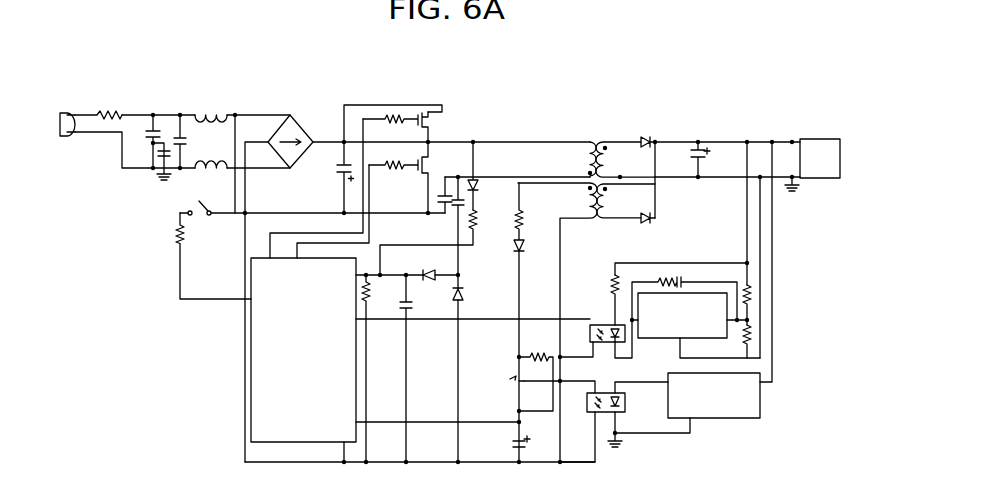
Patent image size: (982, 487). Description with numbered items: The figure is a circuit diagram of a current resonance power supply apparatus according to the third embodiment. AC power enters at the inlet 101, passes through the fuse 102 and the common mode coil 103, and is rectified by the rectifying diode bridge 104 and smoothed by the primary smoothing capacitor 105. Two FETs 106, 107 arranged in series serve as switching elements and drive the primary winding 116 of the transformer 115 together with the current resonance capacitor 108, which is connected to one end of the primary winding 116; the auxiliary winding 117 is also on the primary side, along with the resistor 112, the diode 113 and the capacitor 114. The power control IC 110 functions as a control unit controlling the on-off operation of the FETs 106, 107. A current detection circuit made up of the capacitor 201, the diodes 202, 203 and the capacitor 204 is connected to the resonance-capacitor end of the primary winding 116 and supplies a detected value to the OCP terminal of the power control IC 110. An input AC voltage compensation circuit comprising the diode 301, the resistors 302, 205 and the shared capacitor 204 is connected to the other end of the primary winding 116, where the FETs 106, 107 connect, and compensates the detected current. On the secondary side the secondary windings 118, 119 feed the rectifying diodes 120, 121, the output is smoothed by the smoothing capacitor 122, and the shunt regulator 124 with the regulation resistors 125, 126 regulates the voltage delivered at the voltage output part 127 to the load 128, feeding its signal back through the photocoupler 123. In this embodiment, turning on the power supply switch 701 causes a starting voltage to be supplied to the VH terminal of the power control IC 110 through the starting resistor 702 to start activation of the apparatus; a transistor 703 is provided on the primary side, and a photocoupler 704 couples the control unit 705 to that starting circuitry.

The inlet 101 is at (68, 112).
The fuse 102 is at (105, 113).
The common mode coil 103 is at (213, 114).
The rectifying diode bridge 104 is at (299, 127).
The primary smoothing capacitor 105 is at (340, 173).
The FET 106 is at (417, 110).
The FET 107 is at (416, 172).
The current resonance capacitor 108 is at (440, 192).
The power control integrated circuit 110 is at (251, 383).
The resistor 112 is at (515, 223).
The diode 113 is at (464, 290).
The capacitor 114 is at (513, 450).
The transformer 115 is at (586, 284).
The primary winding 116 is at (585, 160).
The auxiliary winding 117 is at (578, 202).
The secondary winding 118 is at (607, 156).
The secondary winding 119 is at (608, 206).
The rectifying diode 120 is at (645, 138).
The rectifying diode 121 is at (652, 221).
The smoothing capacitor 122 is at (694, 146).
The photocoupler 123 is at (612, 324).
The shunt regulator 124 is at (651, 338).
The regulation resistor 125 is at (752, 298).
The regulation resistor 126 is at (752, 340).
The voltage output part 127 is at (799, 141).
The load 128 is at (820, 179).
The capacitor 201 is at (456, 222).
The diode 202 is at (440, 272).
The diode 203 is at (464, 305).
The capacitor 204 is at (410, 306).
The resistor 205 is at (369, 300).
The diode 301 is at (478, 183).
The resistor 302 is at (478, 216).
The power supply switch 701 is at (204, 209).
The starting resistor 702 is at (183, 243).
The transistor 703 is at (516, 377).
The photocoupler 704 is at (625, 405).
The control unit 705 is at (720, 418).